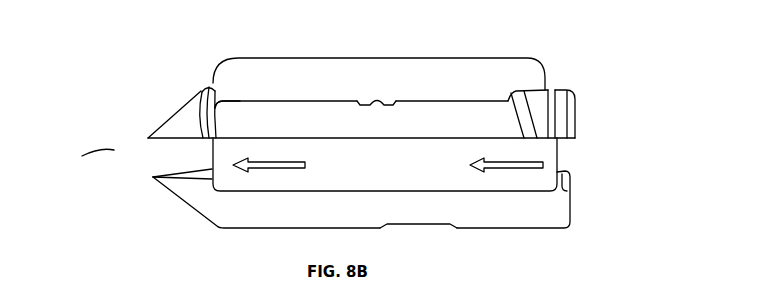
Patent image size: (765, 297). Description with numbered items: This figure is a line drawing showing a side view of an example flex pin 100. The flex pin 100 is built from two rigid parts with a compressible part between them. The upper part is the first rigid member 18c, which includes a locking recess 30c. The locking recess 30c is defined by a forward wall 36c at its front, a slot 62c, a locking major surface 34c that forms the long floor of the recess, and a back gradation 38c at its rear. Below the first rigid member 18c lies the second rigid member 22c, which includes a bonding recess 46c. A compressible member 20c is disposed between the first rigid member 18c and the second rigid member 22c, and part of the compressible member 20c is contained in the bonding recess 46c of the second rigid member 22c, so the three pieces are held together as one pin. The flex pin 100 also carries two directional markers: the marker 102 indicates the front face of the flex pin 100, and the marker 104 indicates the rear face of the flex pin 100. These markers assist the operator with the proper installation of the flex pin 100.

The flex pin 100 is at (92, 163).
The first rigid member 18c is at (590, 114).
The compressible member 20c is at (448, 166).
The second rigid member 22c is at (578, 198).
The locking recess 30c is at (414, 58).
The locking major surface 34c is at (480, 101).
The forward wall 36c is at (216, 92).
The back gradation 38c is at (545, 87).
The bonding recess 46c is at (230, 181).
The slot 62c is at (224, 101).
The directional marker 102 is at (385, 102).
The directional marker 104 is at (421, 228).